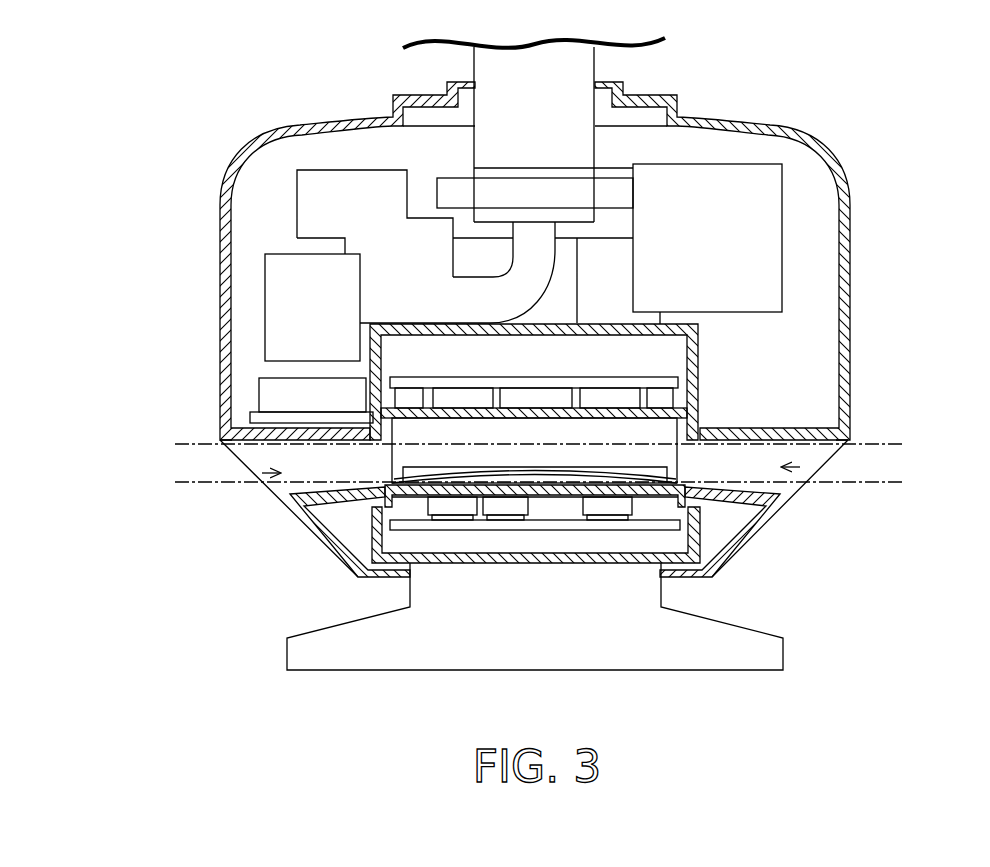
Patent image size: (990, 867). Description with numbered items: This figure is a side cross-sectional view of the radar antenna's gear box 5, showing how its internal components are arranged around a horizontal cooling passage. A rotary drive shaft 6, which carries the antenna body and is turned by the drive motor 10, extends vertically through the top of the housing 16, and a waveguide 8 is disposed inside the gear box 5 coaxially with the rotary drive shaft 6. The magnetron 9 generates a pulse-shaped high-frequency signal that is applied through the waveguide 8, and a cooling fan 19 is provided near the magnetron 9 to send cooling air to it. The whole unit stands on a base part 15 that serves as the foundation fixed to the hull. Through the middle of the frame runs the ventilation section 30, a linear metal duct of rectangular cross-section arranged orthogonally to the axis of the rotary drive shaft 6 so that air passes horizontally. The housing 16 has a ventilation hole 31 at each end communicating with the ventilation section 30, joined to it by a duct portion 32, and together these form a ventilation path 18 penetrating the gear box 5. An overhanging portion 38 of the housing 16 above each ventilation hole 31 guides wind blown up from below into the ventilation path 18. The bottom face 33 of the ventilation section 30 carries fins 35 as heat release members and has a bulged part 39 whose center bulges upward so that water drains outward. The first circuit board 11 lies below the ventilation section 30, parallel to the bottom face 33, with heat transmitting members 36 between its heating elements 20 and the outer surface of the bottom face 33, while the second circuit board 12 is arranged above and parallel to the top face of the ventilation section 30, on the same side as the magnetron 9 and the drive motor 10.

The gear box 5 is at (200, 203).
The rotary drive shaft 6 is at (588, 67).
The waveguide 8 is at (437, 283).
The magnetron 9 is at (281, 259).
The drive motor 10 is at (745, 313).
The first circuit board 11 is at (555, 527).
The second circuit board 12 is at (651, 385).
The base part 15 is at (770, 655).
The housing 16 is at (263, 137).
The ventilation path 18 is at (870, 481).
The cooling fan 19 is at (270, 387).
The heating elements 20 is at (455, 518).
The ventilation section 30 is at (693, 457).
The ventilation hole 31 is at (220, 484).
The duct portion 32 is at (262, 473).
The bottom face 33 is at (397, 483).
The fins 35 is at (482, 473).
The heat transmitting members 36 is at (360, 566).
The overhanging portion 38 is at (237, 447).
The bulged part 39 is at (538, 466).